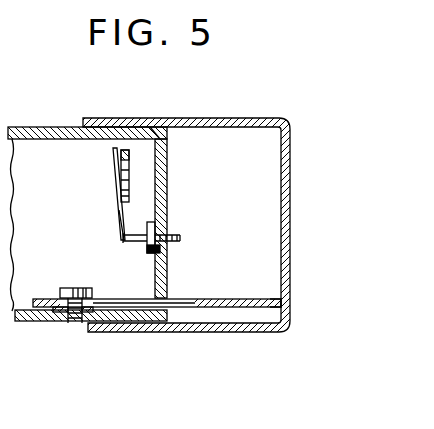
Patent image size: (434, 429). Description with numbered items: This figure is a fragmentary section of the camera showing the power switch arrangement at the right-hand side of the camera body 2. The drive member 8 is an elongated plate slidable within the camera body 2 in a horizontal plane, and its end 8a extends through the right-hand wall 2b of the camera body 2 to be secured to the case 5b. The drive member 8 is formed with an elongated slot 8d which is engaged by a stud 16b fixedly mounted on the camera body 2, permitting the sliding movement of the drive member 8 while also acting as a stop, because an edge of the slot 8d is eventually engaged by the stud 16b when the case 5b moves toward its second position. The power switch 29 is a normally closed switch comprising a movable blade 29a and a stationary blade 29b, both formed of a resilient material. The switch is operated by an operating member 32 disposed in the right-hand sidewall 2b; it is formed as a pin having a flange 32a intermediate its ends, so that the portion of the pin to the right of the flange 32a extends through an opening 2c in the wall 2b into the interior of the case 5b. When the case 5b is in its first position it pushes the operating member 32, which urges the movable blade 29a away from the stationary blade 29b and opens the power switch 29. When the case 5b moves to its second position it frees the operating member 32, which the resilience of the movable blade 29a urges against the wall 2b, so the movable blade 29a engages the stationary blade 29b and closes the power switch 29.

The camera body 2 is at (43, 133).
The right-hand wall 2b is at (166, 159).
The opening 2c is at (167, 203).
The case 5b is at (290, 158).
The drive member 8 is at (216, 299).
The end of drive member 8a is at (284, 300).
The elongated slot 8d is at (138, 300).
The stud 16b is at (63, 289).
The power switch 29 is at (118, 160).
The movable blade 29a is at (120, 225).
The stationary blade 29b is at (123, 185).
The operating member 32 is at (180, 240).
The flange 32a is at (150, 247).